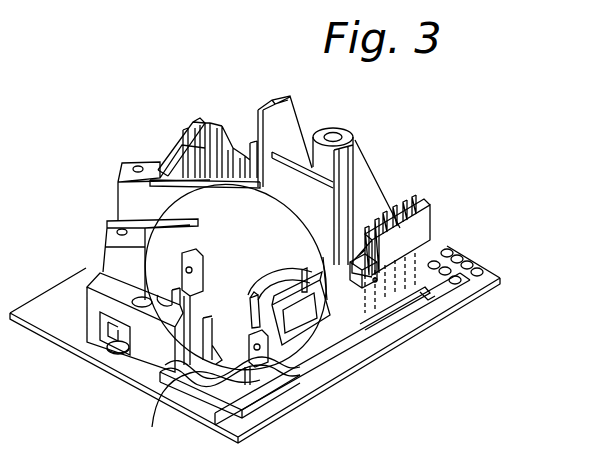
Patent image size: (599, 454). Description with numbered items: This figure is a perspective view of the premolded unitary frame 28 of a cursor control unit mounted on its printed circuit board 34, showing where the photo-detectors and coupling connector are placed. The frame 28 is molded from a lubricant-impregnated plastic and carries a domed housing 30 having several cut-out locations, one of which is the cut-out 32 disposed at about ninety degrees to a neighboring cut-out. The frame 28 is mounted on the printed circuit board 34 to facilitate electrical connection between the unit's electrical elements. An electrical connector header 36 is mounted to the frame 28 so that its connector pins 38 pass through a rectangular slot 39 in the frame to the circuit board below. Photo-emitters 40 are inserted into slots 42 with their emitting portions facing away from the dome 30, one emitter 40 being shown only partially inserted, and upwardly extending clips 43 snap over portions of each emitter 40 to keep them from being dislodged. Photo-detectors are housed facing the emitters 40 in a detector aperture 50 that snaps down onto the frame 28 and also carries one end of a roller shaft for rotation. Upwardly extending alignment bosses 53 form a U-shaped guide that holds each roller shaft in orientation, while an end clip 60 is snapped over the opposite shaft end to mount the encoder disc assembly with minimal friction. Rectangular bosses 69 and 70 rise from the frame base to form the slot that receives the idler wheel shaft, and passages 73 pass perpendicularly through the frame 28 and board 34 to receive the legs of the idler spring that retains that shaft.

The unitary frame 28 is at (375, 135).
The domed housing 30 is at (236, 277).
The cut-out location 32 is at (274, 280).
The printed circuit board 34 is at (493, 280).
The electrical connector header 36 is at (428, 222).
The connector pins 38 is at (393, 205).
The rectangular slot 39 is at (432, 302).
The photo-emitter 40 is at (195, 287).
The slot 42 is at (200, 406).
The upwardly extending clip 43 is at (231, 332).
The detector aperture 50 is at (200, 125).
The alignment boss 53 is at (293, 306).
The end clip 60 is at (350, 288).
The rectangular boss 69 is at (125, 163).
The rectangular boss 70 is at (108, 225).
The passage 73 is at (139, 166).